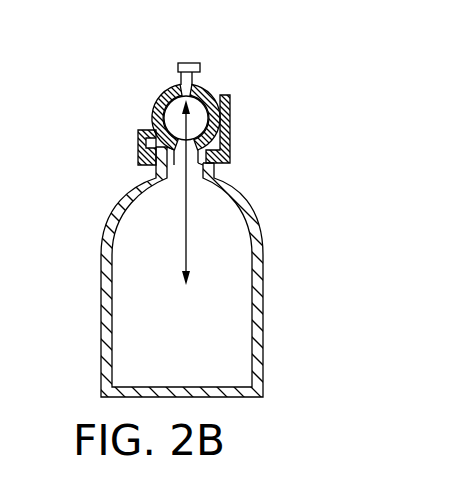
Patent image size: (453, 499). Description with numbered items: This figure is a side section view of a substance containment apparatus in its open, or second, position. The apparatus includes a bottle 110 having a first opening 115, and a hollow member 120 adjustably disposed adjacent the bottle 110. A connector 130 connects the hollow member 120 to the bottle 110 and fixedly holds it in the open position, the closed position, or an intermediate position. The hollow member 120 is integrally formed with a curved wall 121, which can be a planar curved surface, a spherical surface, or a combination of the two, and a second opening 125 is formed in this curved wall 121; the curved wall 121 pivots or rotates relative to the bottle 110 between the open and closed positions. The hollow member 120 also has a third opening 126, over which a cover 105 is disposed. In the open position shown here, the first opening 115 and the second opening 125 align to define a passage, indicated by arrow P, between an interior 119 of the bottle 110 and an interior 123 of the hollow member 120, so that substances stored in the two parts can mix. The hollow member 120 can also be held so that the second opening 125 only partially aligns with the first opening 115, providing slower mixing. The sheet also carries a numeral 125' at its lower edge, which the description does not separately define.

The cover 105 is at (193, 62).
The bottle 110 is at (70, 340).
The first opening 115 is at (203, 170).
The interior of the bottle 119 is at (205, 303).
The hollow member 120 is at (90, 110).
The curved wall 121 is at (228, 116).
The interior of the hollow member 123 is at (203, 82).
The second opening 125 is at (247, 139).
The passage 125' is at (111, 494).
The third opening 126 is at (182, 75).
The connector 130 is at (138, 143).
The passage P is at (185, 217).